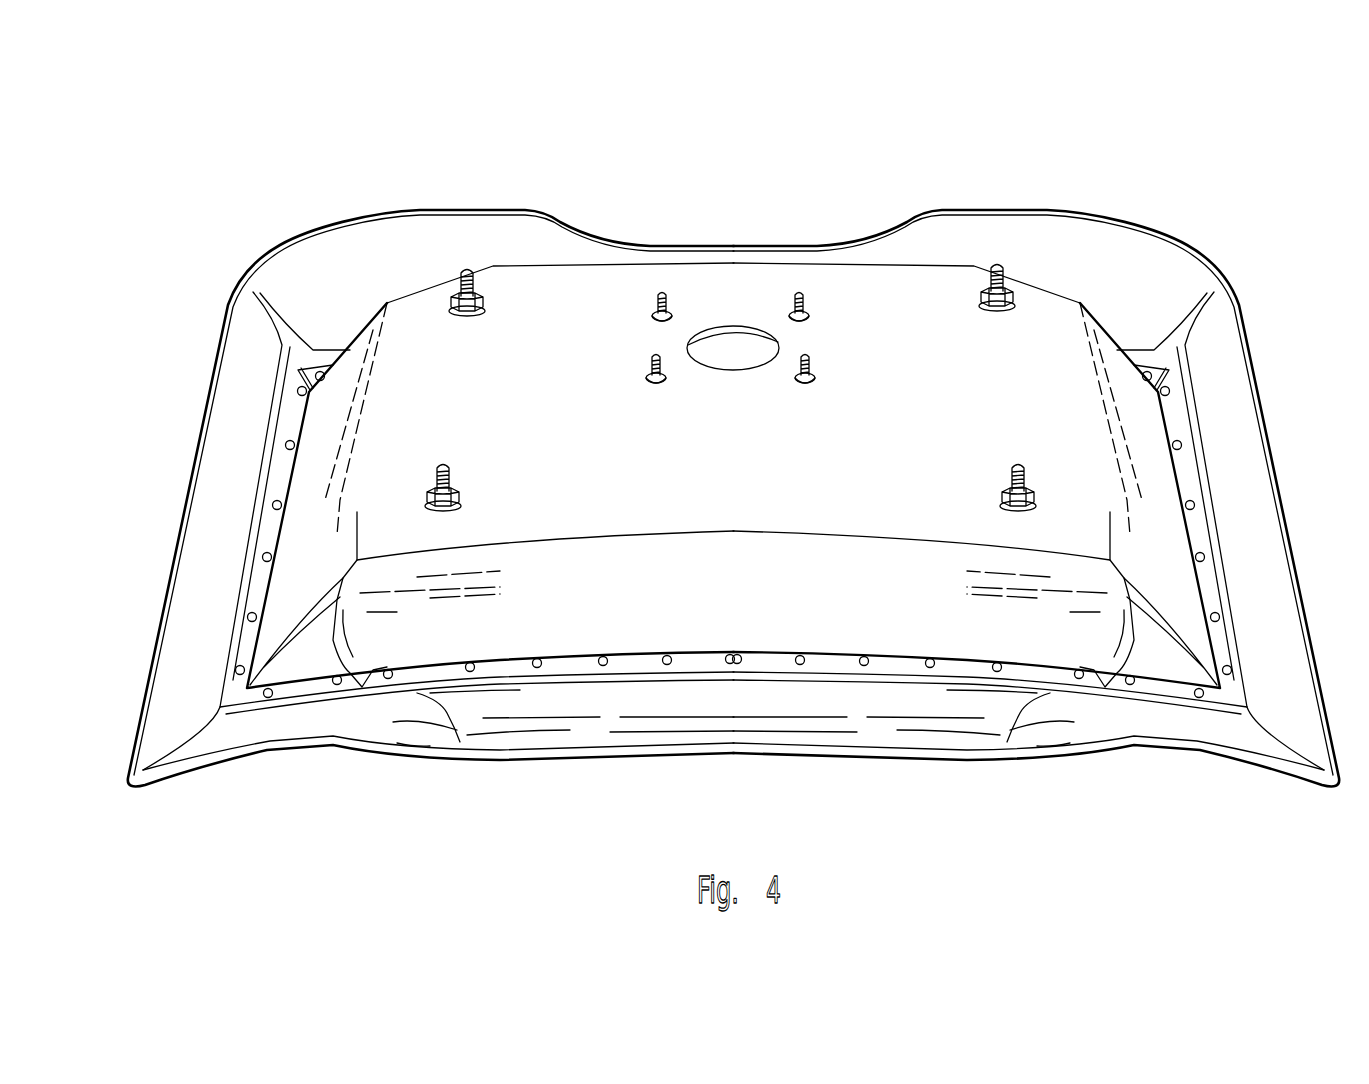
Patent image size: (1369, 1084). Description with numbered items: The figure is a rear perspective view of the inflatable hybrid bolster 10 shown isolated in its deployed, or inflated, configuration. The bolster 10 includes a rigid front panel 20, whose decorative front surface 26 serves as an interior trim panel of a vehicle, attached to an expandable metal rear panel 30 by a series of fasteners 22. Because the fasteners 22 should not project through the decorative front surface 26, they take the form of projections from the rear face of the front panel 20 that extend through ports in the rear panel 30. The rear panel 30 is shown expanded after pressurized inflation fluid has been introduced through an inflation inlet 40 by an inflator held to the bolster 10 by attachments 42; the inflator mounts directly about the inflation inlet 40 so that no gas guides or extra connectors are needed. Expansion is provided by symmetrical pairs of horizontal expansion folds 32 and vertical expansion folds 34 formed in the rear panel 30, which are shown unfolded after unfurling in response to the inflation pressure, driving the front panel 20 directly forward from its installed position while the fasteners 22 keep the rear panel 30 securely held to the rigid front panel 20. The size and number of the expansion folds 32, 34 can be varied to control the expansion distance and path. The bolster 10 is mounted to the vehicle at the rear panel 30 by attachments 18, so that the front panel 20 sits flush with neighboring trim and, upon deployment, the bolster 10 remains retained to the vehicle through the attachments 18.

The inflatable hybrid bolster 10 is at (816, 172).
The attachments 18 is at (1007, 300).
The rigid front panel 20 is at (827, 318).
The fasteners 22 is at (1175, 440).
The decorative front surface 26 is at (223, 323).
The expandable metal rear panel 30 is at (937, 517).
The horizontal expansion folds 32 is at (533, 262).
The vertical expansion folds 34 is at (350, 468).
The inflation inlet 40 is at (723, 343).
The attachments 42 is at (650, 376).